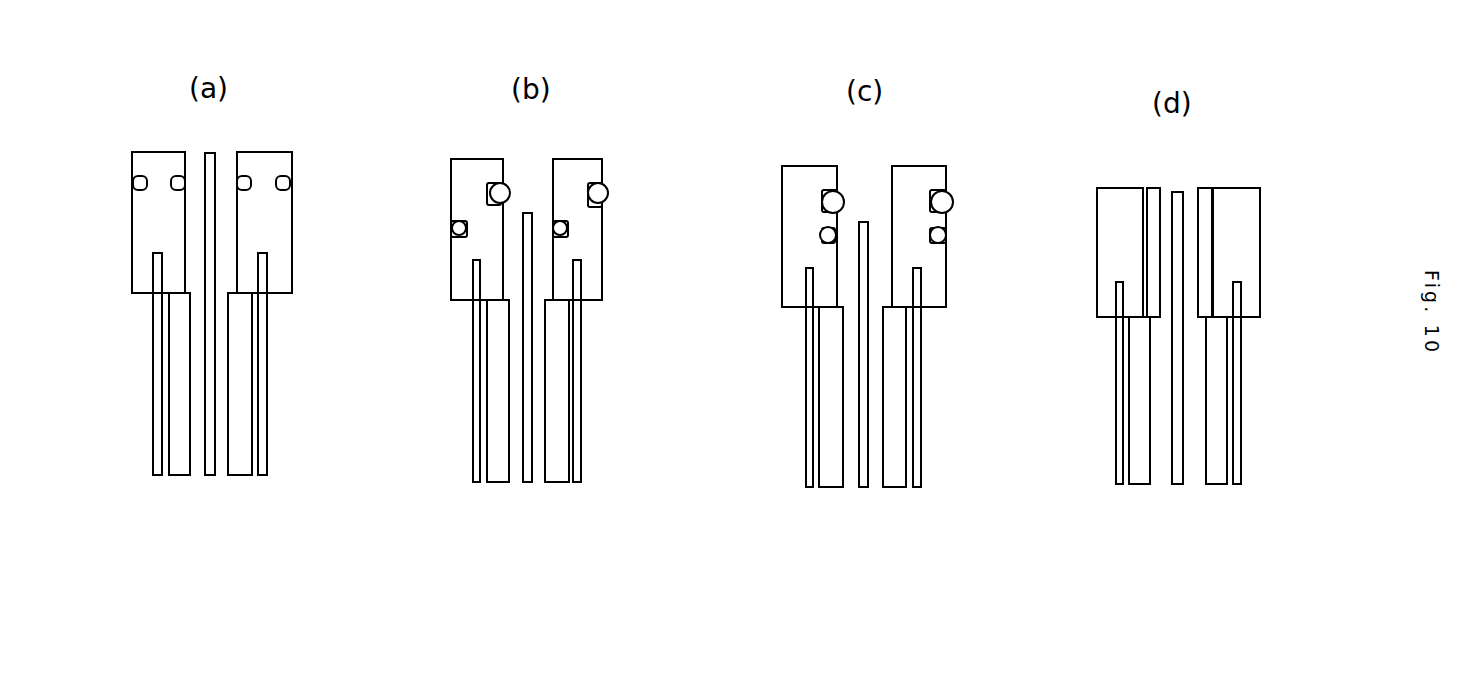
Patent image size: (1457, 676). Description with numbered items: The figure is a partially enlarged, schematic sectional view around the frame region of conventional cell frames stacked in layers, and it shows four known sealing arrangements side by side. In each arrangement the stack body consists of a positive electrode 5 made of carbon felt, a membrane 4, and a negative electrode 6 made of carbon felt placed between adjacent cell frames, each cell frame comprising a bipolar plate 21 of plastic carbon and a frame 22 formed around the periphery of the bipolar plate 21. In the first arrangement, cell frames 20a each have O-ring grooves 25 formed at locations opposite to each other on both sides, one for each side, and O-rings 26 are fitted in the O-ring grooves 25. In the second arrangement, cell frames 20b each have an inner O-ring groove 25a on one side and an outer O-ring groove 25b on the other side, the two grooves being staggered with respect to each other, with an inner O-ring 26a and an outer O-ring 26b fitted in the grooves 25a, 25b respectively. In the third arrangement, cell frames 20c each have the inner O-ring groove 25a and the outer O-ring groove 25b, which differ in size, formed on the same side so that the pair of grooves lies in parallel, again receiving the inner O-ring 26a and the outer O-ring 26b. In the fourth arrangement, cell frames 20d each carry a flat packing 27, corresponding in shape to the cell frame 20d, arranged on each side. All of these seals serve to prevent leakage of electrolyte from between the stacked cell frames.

The membrane 4 is at (210, 478).
The positive electrode 5 is at (174, 478).
The negative electrode 6 is at (237, 478).
The bipolar plate 21 is at (153, 352).
The frame 22 is at (578, 178).
The O-ring groove 25 is at (244, 191).
The O-ring 26 is at (250, 179).
The inner O-ring groove 25a is at (459, 237).
The outer O-ring groove 25b is at (494, 184).
The inner O-ring 26a is at (562, 228).
The outer O-ring 26b is at (598, 198).
The flat packing 27 is at (1204, 188).
The cell frame 20a is at (292, 322).
The cell frame 20b is at (606, 338).
The cell frame 20c is at (951, 343).
The cell frame 20d is at (1266, 355).